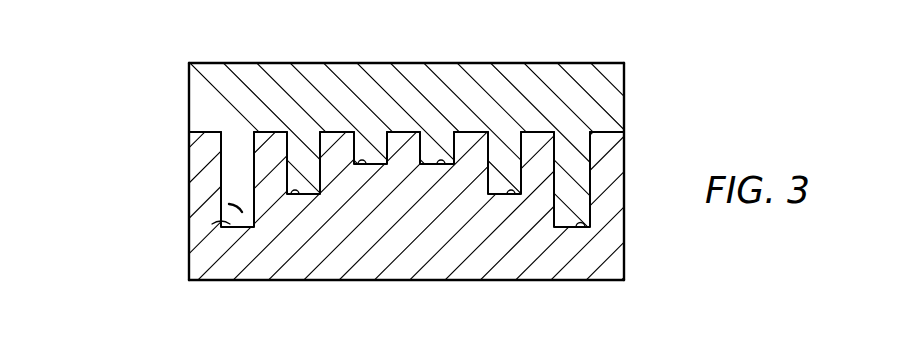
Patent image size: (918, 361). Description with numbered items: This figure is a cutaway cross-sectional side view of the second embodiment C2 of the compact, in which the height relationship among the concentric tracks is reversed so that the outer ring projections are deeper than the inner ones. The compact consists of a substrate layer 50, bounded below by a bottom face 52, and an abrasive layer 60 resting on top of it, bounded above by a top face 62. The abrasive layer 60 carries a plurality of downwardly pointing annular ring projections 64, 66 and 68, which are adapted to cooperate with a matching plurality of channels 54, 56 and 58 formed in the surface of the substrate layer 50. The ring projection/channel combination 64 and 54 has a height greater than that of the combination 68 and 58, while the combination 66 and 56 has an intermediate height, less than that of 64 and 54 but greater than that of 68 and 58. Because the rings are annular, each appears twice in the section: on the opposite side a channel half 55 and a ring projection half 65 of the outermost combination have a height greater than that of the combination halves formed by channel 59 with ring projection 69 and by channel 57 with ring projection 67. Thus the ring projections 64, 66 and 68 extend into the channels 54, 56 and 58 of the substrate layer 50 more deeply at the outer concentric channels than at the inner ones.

The second embodiment compact C2 is at (118, 142).
The substrate layer 50 is at (212, 268).
The bottom face 52 is at (245, 280).
The channel 54 is at (220, 223).
The channel half 55 is at (583, 228).
The channel 56 is at (290, 195).
The channel half 57 is at (516, 195).
The channel 58 is at (363, 165).
The channel half 59 is at (447, 165).
The abrasive layer 60 is at (200, 93).
The top face 62 is at (285, 62).
The ring projection 64 is at (232, 212).
The ring projection half 65 is at (567, 222).
The ring projection 66 is at (300, 190).
The ring projection half 67 is at (510, 190).
The ring projection 68 is at (372, 160).
The ring projection half 69 is at (436, 162).